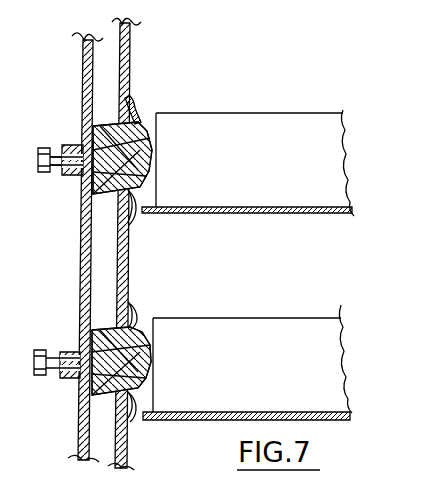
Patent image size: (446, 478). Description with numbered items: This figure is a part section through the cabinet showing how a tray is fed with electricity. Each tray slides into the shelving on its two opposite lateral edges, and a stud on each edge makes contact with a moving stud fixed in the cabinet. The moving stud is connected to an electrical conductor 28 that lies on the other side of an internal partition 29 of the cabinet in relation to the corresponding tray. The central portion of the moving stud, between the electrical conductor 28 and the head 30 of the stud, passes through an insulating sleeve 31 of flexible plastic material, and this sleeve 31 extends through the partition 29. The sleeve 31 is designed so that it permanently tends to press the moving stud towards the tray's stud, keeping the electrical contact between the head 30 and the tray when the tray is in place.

The electrical conductor 28 is at (82, 318).
The internal partition 29 is at (131, 68).
The head 30 is at (150, 186).
The insulating sleeve 31 is at (134, 105).